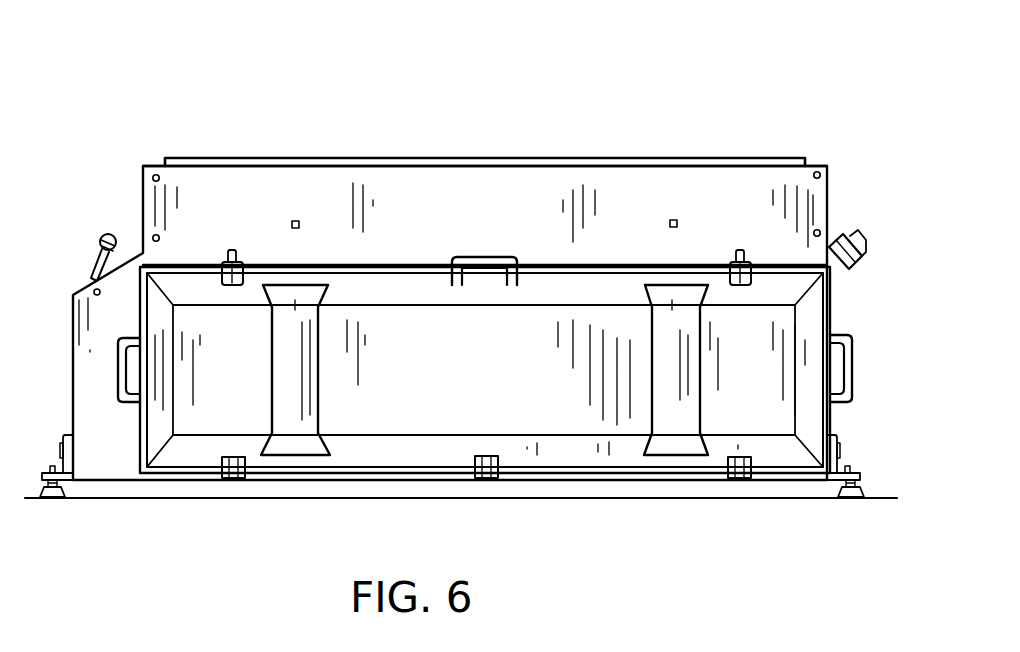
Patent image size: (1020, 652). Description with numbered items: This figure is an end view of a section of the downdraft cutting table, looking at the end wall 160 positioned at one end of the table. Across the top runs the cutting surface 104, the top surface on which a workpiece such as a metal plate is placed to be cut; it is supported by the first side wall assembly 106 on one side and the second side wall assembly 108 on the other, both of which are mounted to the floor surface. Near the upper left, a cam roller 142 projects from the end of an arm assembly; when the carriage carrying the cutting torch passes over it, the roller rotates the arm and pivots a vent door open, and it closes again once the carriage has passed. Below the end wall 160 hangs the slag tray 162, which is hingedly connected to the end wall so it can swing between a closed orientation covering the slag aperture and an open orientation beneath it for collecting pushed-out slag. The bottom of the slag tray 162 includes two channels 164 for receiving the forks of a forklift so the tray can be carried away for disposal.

The cutting surface 104 is at (597, 157).
The first side wall assembly 106 is at (70, 364).
The second side wall assembly 108 is at (831, 311).
The cam roller 142 is at (100, 237).
The end wall 160 is at (427, 193).
The slag tray 162 is at (465, 400).
The channels 164 is at (298, 432).